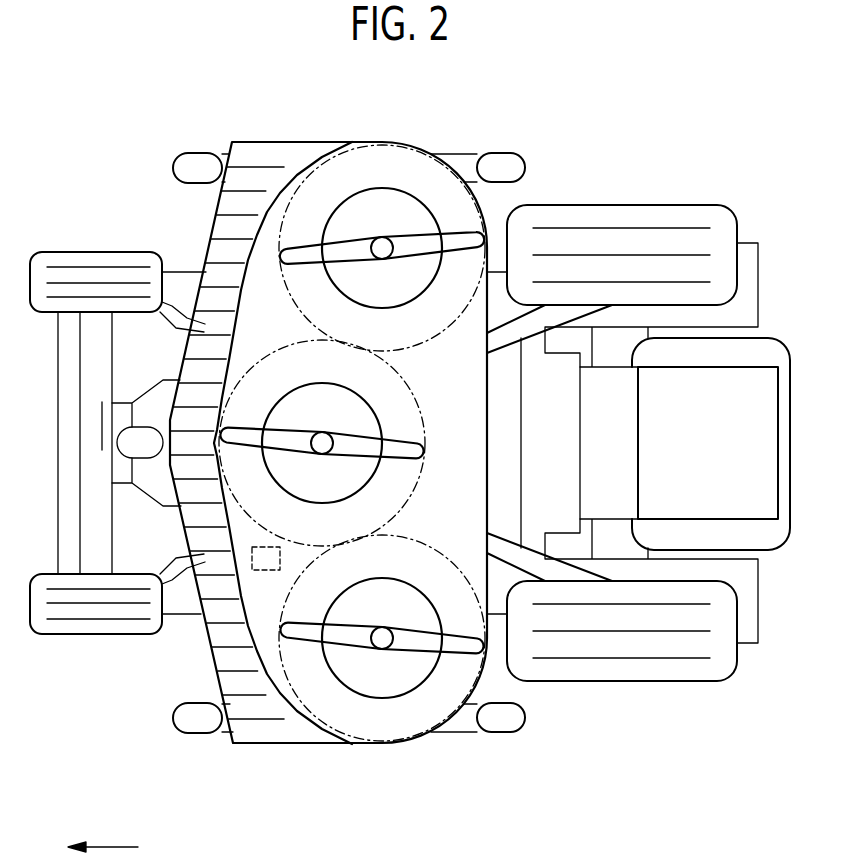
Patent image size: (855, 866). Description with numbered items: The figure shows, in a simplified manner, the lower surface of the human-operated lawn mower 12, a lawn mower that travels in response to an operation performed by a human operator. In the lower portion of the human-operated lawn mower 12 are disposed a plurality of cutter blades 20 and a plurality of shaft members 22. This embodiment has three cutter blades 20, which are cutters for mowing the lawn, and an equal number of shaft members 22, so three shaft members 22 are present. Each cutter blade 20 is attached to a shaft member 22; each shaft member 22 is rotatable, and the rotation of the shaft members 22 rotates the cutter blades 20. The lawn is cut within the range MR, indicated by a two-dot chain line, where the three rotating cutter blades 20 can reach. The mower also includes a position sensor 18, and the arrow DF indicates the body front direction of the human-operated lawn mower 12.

The human-operated lawn mower 12 is at (170, 81).
The position sensor 18 is at (281, 559).
The cutter blades 20 is at (403, 243).
The shaft members 22 is at (379, 253).
The range MR is at (308, 172).
The arrow indicating body front direction DF is at (103, 834).